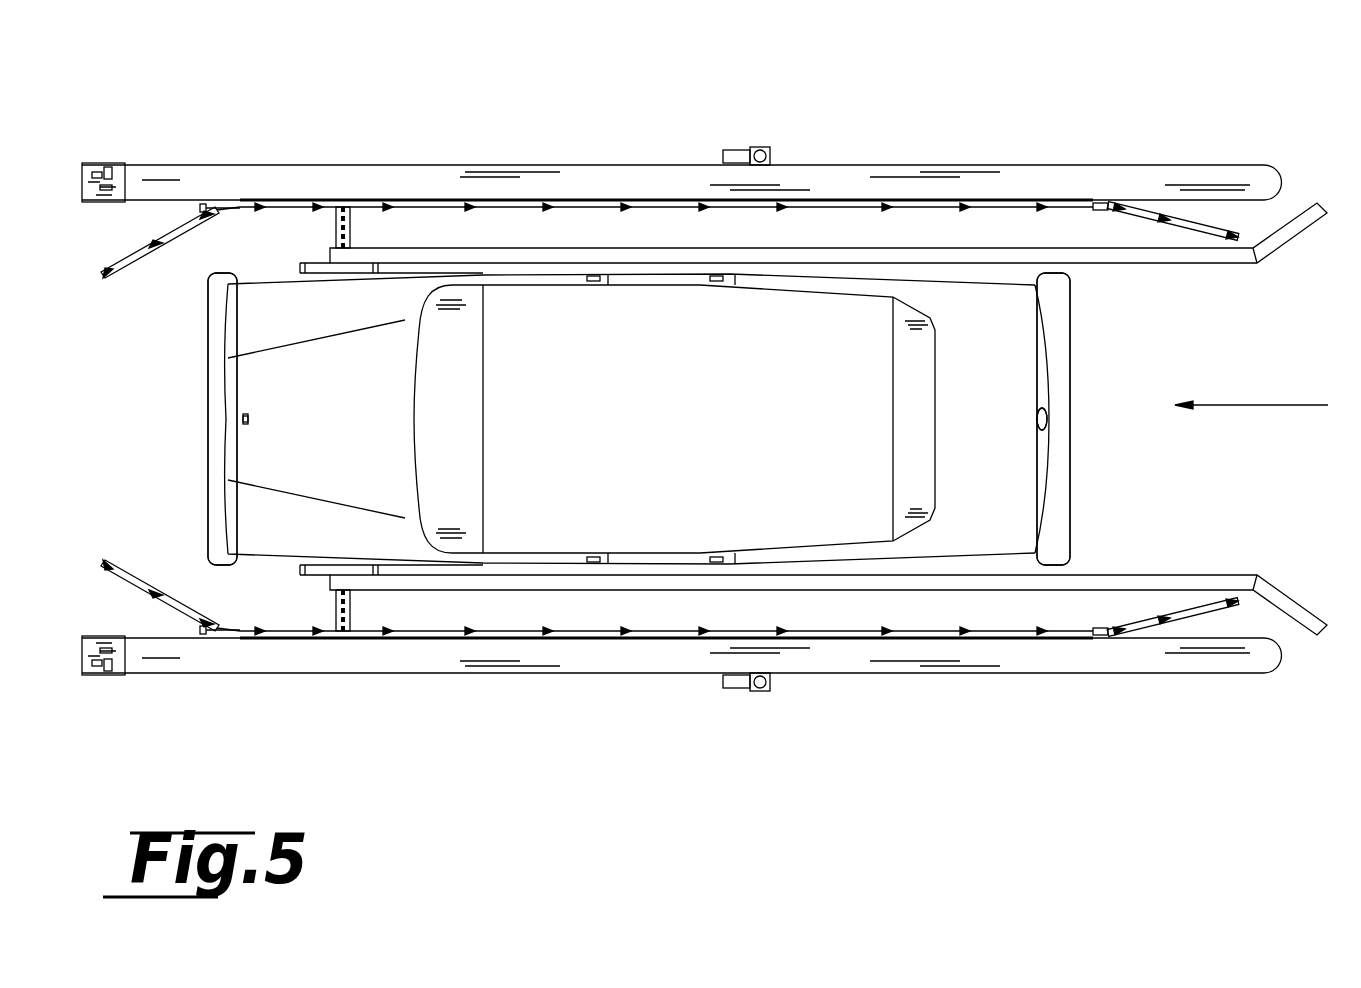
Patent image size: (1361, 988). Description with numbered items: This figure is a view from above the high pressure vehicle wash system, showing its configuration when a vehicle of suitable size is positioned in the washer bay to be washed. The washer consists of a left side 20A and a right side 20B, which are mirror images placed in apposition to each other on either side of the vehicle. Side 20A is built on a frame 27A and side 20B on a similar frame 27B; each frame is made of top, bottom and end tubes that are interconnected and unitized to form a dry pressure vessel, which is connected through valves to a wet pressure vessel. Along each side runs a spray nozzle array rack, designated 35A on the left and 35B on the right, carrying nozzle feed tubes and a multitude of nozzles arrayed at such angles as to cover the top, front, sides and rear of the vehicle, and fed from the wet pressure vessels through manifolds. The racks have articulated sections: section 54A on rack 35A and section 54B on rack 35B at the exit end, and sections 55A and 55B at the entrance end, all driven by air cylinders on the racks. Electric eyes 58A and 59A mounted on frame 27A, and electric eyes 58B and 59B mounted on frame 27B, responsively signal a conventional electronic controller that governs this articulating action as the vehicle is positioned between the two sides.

The left side 20A is at (938, 704).
The right side 20B is at (880, 135).
The frame 27A is at (497, 692).
The frame 27B is at (447, 150).
The spray nozzle array rack 35A is at (676, 644).
The spray nozzle array rack 35B is at (665, 195).
The articulated section 54A is at (165, 623).
The articulated section 54B is at (165, 212).
The articulated section 55A is at (1170, 644).
The articulated section 55B is at (1160, 190).
The electric eye 58A is at (203, 633).
The electric eye 58B is at (203, 206).
The electric eye 59A is at (1143, 636).
The electric eye 59B is at (1128, 203).